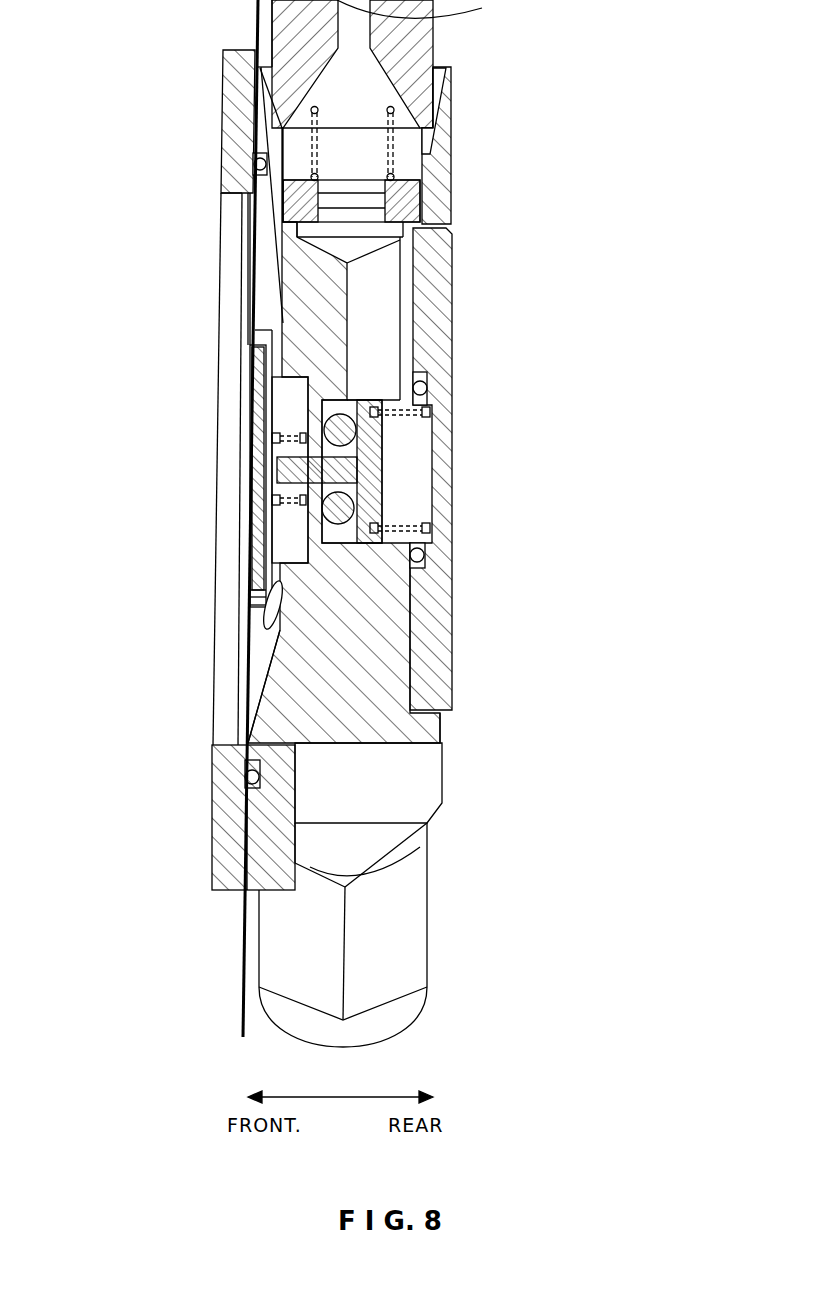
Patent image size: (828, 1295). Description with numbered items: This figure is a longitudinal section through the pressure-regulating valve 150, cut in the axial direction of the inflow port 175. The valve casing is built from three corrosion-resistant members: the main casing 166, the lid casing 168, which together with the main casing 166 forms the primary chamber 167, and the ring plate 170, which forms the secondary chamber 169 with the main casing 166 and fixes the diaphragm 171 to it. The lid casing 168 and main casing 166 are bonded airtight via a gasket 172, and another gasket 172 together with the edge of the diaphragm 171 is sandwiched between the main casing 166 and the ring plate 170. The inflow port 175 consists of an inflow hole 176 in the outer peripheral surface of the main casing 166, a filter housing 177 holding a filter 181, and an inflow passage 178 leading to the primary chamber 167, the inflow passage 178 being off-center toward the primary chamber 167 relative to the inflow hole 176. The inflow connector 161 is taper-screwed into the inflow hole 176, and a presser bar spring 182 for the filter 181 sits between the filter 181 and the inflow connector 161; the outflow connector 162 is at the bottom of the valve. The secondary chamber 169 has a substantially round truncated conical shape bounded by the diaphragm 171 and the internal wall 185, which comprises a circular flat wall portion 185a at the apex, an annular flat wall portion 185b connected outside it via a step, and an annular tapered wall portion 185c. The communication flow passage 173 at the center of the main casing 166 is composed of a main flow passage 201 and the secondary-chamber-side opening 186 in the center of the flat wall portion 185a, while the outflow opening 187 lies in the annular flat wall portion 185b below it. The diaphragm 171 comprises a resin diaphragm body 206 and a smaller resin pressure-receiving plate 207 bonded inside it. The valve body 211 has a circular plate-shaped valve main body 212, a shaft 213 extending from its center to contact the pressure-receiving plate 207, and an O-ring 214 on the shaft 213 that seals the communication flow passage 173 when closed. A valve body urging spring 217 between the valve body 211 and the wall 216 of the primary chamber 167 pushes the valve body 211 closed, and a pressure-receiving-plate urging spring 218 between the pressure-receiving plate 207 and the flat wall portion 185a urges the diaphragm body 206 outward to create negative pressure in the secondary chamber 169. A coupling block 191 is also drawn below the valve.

The pressure-regulating valve 150 is at (600, 140).
The inflow connector 161 is at (417, 48).
The outflow connector 162 is at (407, 940).
The main casing 166 is at (464, 725).
The primary chamber 167 is at (430, 418).
The lid casing 168 is at (470, 668).
The secondary chamber 169 is at (255, 695).
The ring plate 170 is at (195, 853).
The diaphragm 171 is at (152, 530).
The gasket 172 is at (255, 165).
The communication flow passage 173 is at (147, 402).
The inflow port 175 is at (470, 168).
The inflow hole 176 is at (430, 117).
The filter housing 177 is at (445, 222).
The inflow passage 178 is at (387, 292).
The filter 181 is at (283, 212).
The presser bar spring 182 is at (287, 133).
The internal wall 185 is at (140, 248).
The flat wall portion 185a is at (307, 393).
The annular flat wall portion 185b is at (285, 320).
The annular tapered wall portion 185c is at (272, 256).
The secondary-chamber-side opening 186 is at (270, 448).
The outflow opening 187 is at (275, 612).
The coupling block 191 is at (433, 795).
The main flow passage 201 is at (305, 418).
The diaphragm body 206 is at (250, 613).
The pressure-receiving plate 207 is at (262, 557).
The valve body 211 is at (502, 512).
The valve main body 212 is at (367, 460).
The shaft 213 is at (380, 490).
The O-ring 214 is at (338, 525).
The wall 216 is at (423, 508).
The valve body urging spring 217 is at (420, 362).
The pressure-receiving-plate urging spring 218 is at (263, 513).